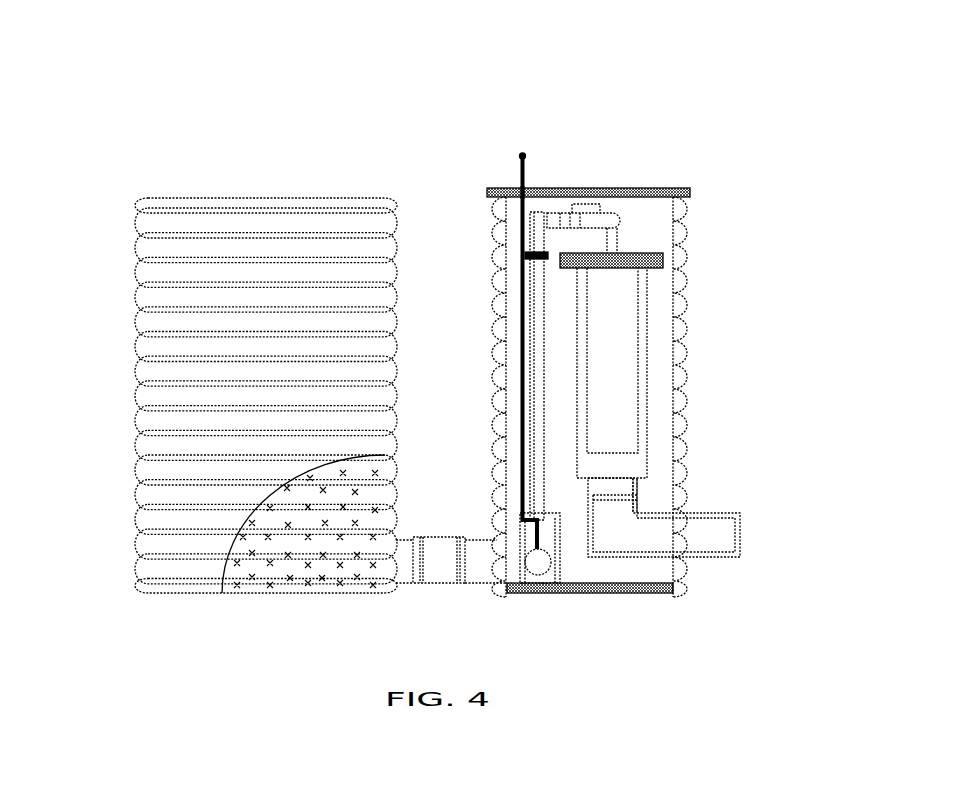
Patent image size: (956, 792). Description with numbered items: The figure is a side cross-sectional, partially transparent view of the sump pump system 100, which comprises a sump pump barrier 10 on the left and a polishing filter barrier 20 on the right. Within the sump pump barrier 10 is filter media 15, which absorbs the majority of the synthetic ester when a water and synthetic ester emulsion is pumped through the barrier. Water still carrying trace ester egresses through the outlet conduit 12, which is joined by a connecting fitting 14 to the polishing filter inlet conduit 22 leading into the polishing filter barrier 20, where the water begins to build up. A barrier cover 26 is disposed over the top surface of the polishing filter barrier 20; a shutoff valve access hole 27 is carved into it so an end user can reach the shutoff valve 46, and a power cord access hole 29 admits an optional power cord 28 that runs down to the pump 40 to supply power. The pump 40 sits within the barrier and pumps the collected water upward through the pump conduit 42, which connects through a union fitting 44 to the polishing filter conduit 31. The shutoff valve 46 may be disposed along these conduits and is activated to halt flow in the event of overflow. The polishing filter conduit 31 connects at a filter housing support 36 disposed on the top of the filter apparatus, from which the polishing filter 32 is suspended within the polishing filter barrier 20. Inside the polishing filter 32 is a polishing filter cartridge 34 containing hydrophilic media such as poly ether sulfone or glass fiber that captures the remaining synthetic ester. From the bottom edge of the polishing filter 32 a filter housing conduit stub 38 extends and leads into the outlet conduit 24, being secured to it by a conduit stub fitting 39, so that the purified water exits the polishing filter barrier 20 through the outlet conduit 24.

The sump pump system 100 is at (178, 80).
The sump pump barrier 10 is at (311, 197).
The filter media 15 is at (288, 560).
The outlet conduit 12 is at (397, 581).
The connecting fitting 14 is at (447, 584).
The polishing filter inlet conduit 22 is at (476, 537).
The polishing filter barrier 20 is at (492, 313).
The barrier cover 26 is at (657, 186).
The shutoff valve access hole 27 is at (600, 185).
The outlet conduit 24 is at (715, 556).
The filter housing conduit stub 38 is at (640, 483).
The conduit stub fitting 39 is at (640, 500).
The power cord 28 is at (517, 168).
The power cord access hole 29 is at (532, 185).
The pump conduit 42 is at (537, 398).
The union fitting 44 is at (522, 250).
The shutoff valve 46 is at (574, 215).
The polishing filter conduit 31 is at (625, 222).
The filter housing support 36 is at (667, 263).
The polishing filter 32 is at (650, 341).
The polishing filter cartridge 34 is at (641, 395).
The pump 40 is at (563, 558).